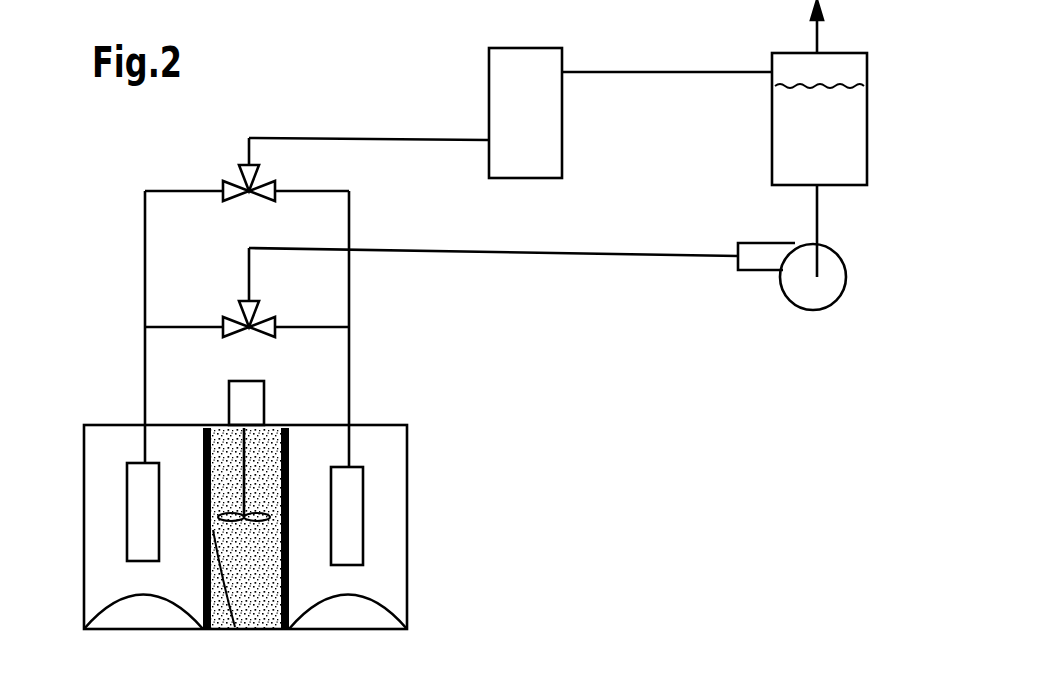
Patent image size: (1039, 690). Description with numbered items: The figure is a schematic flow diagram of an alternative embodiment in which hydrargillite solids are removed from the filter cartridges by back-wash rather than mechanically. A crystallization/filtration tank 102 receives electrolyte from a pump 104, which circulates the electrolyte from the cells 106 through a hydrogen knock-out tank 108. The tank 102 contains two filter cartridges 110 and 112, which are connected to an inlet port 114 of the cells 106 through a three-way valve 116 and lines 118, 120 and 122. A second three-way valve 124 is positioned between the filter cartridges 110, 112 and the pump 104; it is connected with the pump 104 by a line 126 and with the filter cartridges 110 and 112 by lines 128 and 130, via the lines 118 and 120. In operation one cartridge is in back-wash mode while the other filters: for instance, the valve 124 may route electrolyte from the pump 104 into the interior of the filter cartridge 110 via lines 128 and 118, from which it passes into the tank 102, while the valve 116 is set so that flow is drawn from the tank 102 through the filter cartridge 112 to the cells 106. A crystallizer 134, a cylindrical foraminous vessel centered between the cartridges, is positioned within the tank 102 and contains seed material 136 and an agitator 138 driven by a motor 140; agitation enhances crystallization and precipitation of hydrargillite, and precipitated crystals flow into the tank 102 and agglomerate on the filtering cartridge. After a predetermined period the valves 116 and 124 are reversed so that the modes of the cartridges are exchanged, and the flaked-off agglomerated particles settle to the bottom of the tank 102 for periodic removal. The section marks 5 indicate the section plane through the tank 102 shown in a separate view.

The crystallization/filtration tank 102 is at (407, 598).
The pump 104 is at (822, 295).
The cells 106 is at (562, 142).
The hydrogen knock-out tank 108 is at (788, 187).
The filter cartridge 110 is at (350, 540).
The filter cartridge 112 is at (152, 529).
The inlet port 114 is at (488, 140).
The three-way valve 116 is at (250, 194).
The line 118 is at (351, 373).
The line 120 is at (145, 407).
The line 122 is at (367, 139).
The second three-way valve 124 is at (251, 330).
The line 126 is at (512, 255).
The line 128 is at (351, 327).
The line 130 is at (145, 325).
The crystallizer 134 is at (200, 582).
The seed material 136 is at (235, 627).
The agitator 138 is at (247, 513).
The motor 140 is at (243, 407).
The section line 5- 5 is at (73, 445).